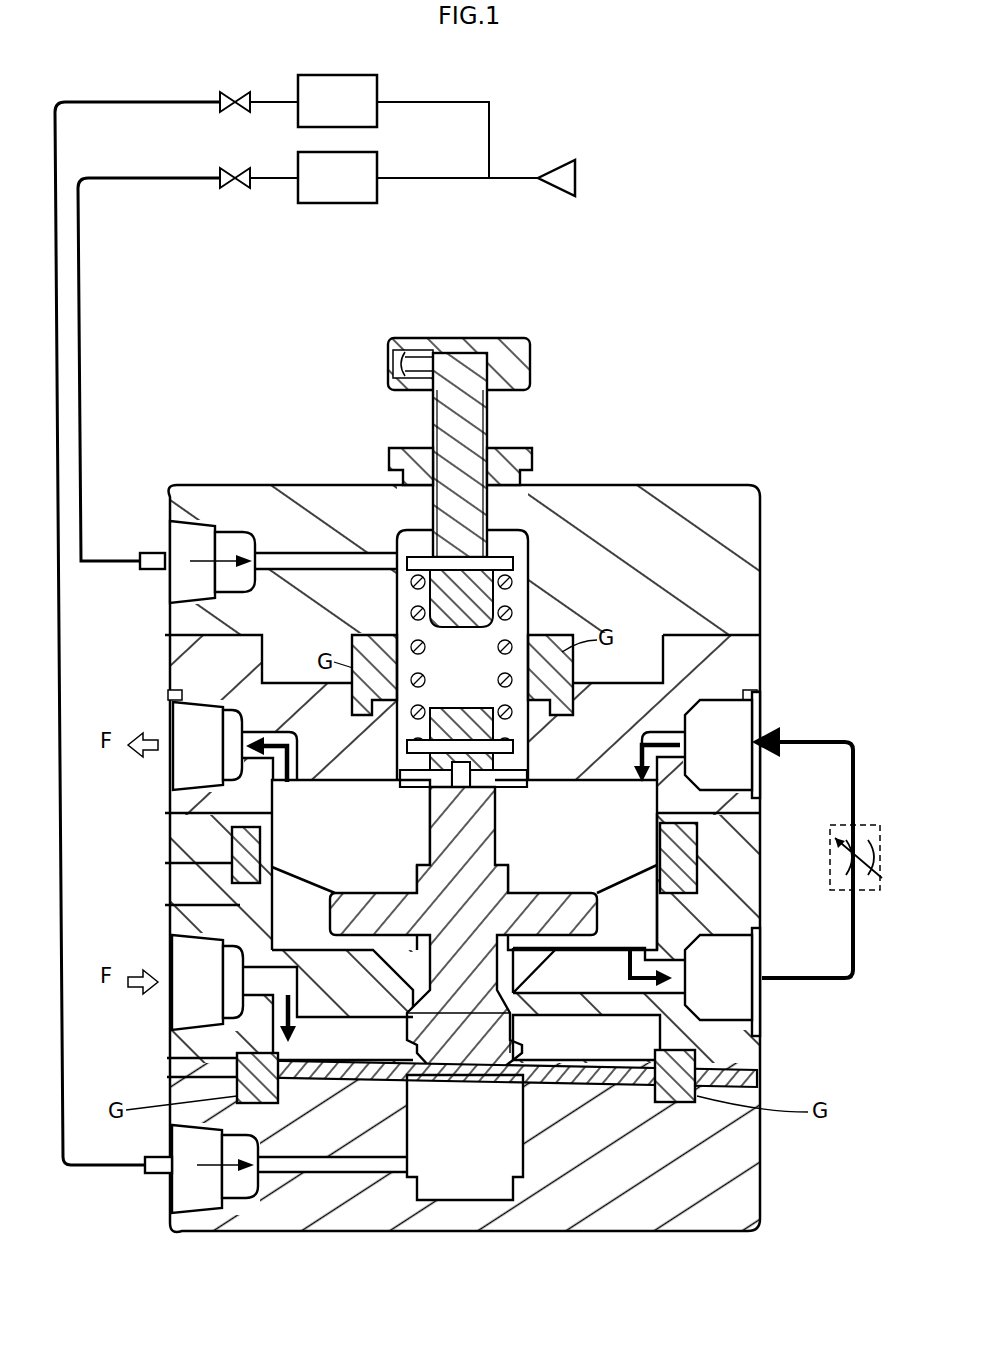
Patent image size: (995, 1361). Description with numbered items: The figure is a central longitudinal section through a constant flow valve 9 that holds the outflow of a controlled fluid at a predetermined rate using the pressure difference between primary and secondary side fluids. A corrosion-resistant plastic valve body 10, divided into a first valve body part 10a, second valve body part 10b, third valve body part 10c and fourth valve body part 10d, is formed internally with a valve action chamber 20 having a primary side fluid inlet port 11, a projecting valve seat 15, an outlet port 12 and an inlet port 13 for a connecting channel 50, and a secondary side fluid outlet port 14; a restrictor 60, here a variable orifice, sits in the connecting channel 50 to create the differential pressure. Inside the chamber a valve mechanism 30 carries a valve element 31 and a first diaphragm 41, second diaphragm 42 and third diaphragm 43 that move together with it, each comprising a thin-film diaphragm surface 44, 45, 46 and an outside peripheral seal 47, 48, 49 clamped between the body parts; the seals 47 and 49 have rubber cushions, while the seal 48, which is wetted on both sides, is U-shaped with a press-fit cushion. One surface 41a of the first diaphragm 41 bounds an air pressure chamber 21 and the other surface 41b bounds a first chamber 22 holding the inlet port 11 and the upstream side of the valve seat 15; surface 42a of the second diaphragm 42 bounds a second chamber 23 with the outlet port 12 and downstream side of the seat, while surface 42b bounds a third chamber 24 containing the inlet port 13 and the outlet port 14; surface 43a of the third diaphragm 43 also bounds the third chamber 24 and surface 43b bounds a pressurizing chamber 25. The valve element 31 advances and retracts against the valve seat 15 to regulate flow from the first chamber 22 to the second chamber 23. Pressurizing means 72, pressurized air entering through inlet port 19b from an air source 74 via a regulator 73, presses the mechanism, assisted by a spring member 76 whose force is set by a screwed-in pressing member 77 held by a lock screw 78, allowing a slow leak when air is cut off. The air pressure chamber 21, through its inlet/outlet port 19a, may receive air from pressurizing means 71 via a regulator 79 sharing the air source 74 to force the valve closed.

The constant flow valve 9 is at (186, 468).
The valve body 10 is at (735, 532).
The first valve body part 10a is at (174, 1222).
The second valve body part 10b is at (175, 1046).
The third valve body part 10c is at (172, 660).
The fourth valve body part 10d is at (170, 503).
The primary side fluid inlet port 11 is at (182, 950).
The outlet port to connecting channel 12 is at (737, 990).
The inlet port from connecting channel 13 is at (750, 724).
The secondary side fluid outlet port 14 is at (182, 720).
The valve seat 15 is at (412, 1020).
The air inlet port/outlet port 19a is at (185, 1152).
The inlet port of pressurized air 19b is at (185, 547).
The valve action chamber 20 is at (275, 898).
The air pressure chamber 21 is at (455, 1178).
The first chamber 22 is at (660, 1040).
The second chamber 23 is at (599, 957).
The third chamber 24 is at (272, 800).
The pressurizing chamber 25 is at (468, 655).
The valve mechanism 30 is at (372, 906).
The valve element 31 is at (430, 1030).
The first diaphragm 41 is at (428, 1083).
The one surface of first diaphragm 41a is at (460, 1082).
The other surface of first diaphragm 41b is at (505, 1057).
The second diaphragm 42 is at (548, 905).
The one surface of second diaphragm 42a is at (645, 890).
The other surface of second diaphragm 42b is at (612, 892).
The third diaphragm 43 is at (415, 790).
The one surface of third diaphragm 43a is at (522, 790).
The other surface of third diaphragm 43b is at (540, 776).
The diaphragm surface 44 is at (496, 1080).
The diaphragm surface 45 is at (300, 903).
The diaphragm surface 46 is at (411, 792).
The peripheral seal 47 is at (237, 1076).
The peripheral seal 48 is at (232, 850).
The peripheral seal 49 is at (700, 686).
The connecting channel 50 is at (853, 795).
The restrictor 60 is at (831, 857).
The pressurizing means 71 is at (226, 1172).
The pressurizing means 72 is at (226, 522).
The regulator 73 is at (356, 200).
The air source 74 is at (576, 178).
The spring member 76 is at (398, 480).
The pressing member 77 is at (478, 442).
The lock screw 78 is at (392, 456).
The regulator 79 is at (362, 98).